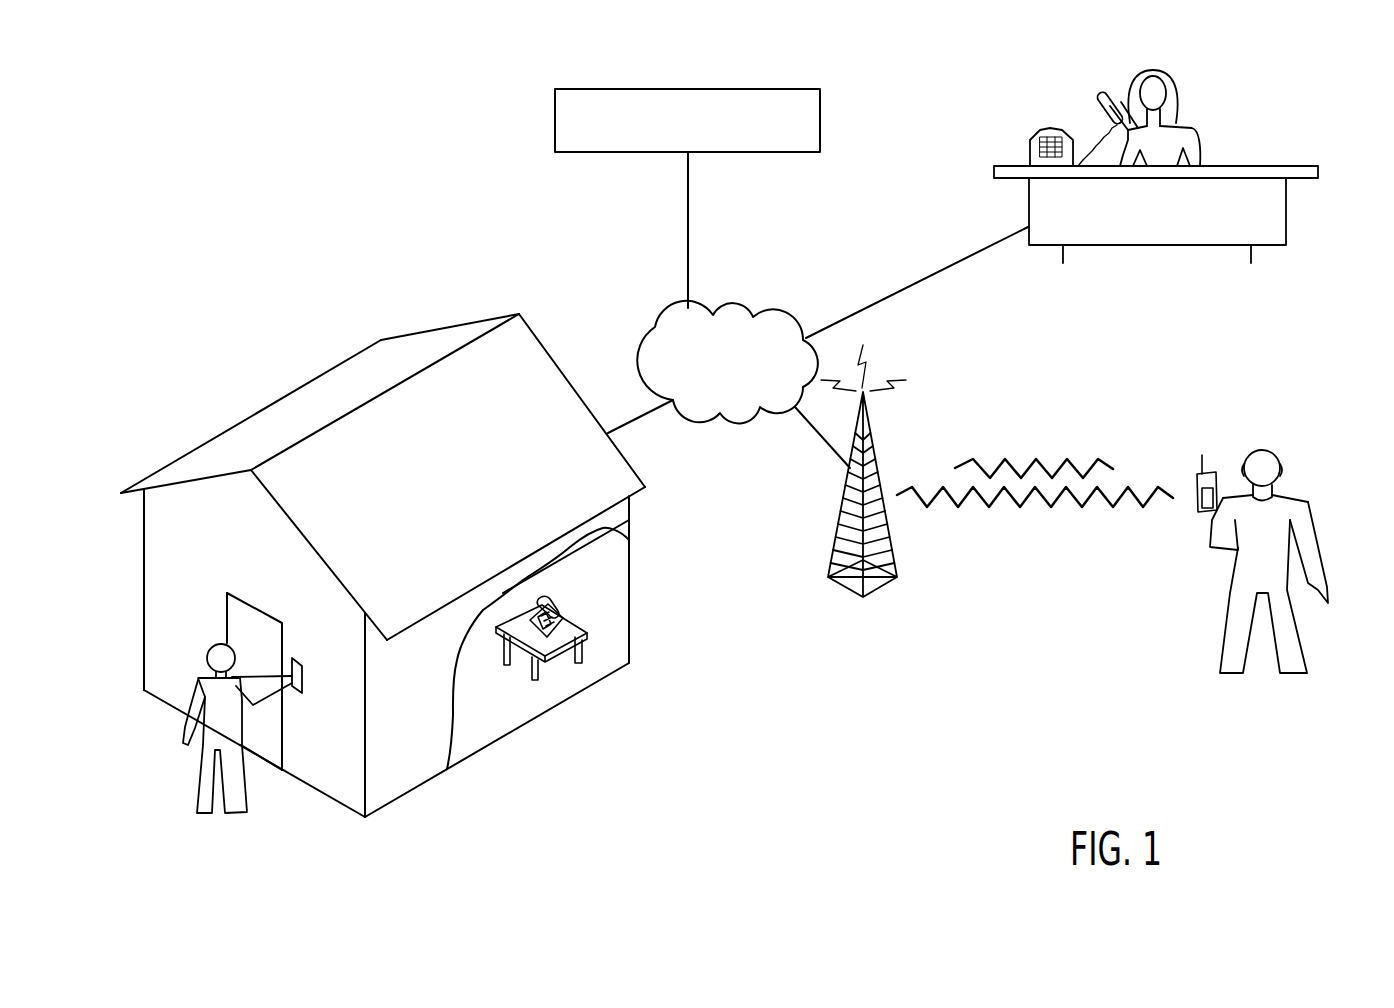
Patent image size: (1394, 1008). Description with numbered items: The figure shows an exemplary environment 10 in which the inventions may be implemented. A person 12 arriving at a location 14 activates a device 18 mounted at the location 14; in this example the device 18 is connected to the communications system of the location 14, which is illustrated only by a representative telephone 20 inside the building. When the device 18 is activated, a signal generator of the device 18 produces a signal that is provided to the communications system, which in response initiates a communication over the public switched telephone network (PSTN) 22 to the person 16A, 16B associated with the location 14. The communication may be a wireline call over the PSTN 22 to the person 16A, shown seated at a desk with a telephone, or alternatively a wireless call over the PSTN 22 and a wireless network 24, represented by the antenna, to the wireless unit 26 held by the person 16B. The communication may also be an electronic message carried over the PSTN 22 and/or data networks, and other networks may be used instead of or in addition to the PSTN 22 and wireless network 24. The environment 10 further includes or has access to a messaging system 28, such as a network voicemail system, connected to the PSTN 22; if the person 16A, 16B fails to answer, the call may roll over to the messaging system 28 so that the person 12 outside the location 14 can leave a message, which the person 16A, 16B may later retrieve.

The environment 10 is at (461, 99).
The person 12 is at (198, 793).
The location 14 is at (143, 618).
The person 16A is at (1193, 136).
The person 16B is at (1308, 502).
The device 18 is at (303, 670).
The telephone 20 is at (550, 593).
The public switched telephone network (PSTN) 22 is at (737, 302).
The wireless network 24 is at (870, 455).
The wireless unit 26 is at (1212, 472).
The messaging system 28 is at (822, 107).